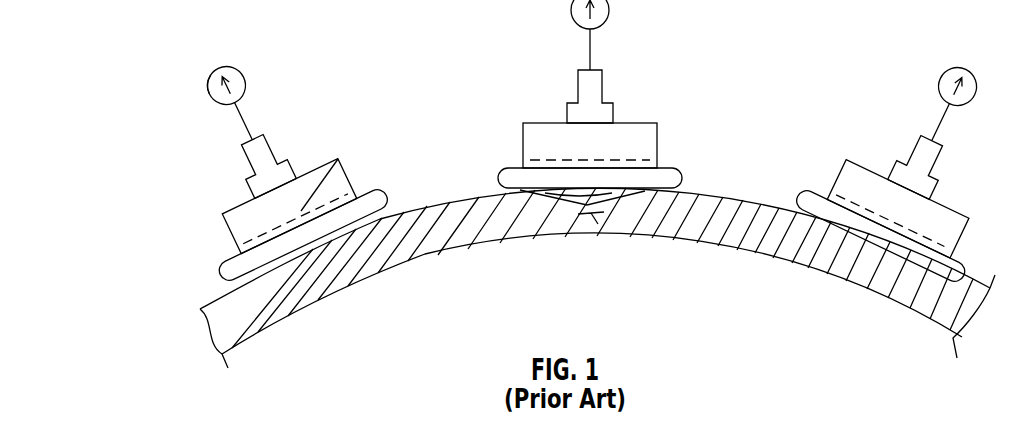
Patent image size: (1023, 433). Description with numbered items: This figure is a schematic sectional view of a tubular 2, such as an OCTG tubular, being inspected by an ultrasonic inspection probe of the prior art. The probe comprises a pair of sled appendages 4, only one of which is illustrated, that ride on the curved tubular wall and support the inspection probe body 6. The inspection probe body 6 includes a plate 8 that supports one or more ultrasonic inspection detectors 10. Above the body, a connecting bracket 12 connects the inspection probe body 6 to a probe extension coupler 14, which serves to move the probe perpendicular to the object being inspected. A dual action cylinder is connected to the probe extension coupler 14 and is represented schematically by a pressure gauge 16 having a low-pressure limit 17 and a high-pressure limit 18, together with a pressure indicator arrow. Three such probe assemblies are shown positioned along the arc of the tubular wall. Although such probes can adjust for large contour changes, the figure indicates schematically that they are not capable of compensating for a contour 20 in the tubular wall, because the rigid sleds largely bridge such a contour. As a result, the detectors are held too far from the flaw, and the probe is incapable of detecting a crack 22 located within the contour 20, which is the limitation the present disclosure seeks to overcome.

The tubular 2 is at (265, 318).
The sled appendage 4 is at (218, 272).
The inspection probe body 6 is at (222, 215).
The plate 8 is at (354, 193).
The ultrasonic inspection detector 10 is at (233, 214).
The connecting bracket 12 is at (264, 156).
The probe extension coupler 14 is at (243, 127).
The pressure gauge 16 is at (248, 88).
The low-pressure limit 17 is at (205, 83).
The high-pressure limit 18 is at (233, 70).
The contour 20 is at (548, 212).
The crack 22 is at (598, 222).